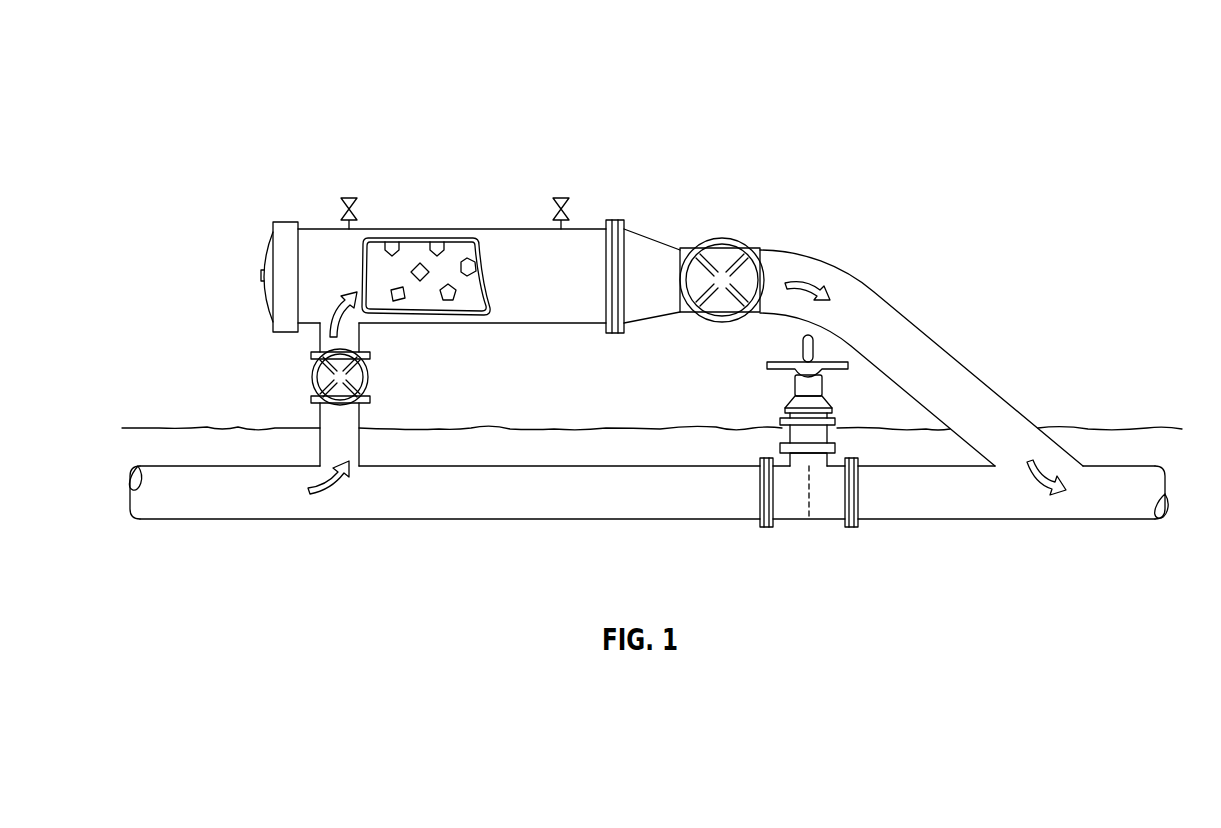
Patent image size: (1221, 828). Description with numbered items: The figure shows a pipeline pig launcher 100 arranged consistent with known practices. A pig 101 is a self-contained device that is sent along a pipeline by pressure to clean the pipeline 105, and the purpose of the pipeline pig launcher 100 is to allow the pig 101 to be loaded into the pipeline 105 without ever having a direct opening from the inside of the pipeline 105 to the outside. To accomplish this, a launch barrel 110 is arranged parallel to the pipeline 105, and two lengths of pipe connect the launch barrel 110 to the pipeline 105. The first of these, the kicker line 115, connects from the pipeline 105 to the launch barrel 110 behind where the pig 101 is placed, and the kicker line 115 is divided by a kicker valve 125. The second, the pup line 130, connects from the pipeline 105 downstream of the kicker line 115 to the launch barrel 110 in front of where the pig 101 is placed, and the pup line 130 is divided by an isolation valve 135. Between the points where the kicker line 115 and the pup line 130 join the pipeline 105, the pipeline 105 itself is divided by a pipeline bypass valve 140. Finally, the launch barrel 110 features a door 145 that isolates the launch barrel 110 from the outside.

The pipeline pig launcher 100 is at (250, 128).
The pig 101 is at (446, 226).
The pipeline 105 is at (466, 530).
The launch barrel 110 is at (470, 325).
The kicker line 115 is at (314, 415).
The kicker valve 125 is at (306, 370).
The pup line 130 is at (935, 318).
The isolation valve 135 is at (726, 226).
The pipeline bypass valve 140 is at (765, 534).
The door 145 is at (250, 278).